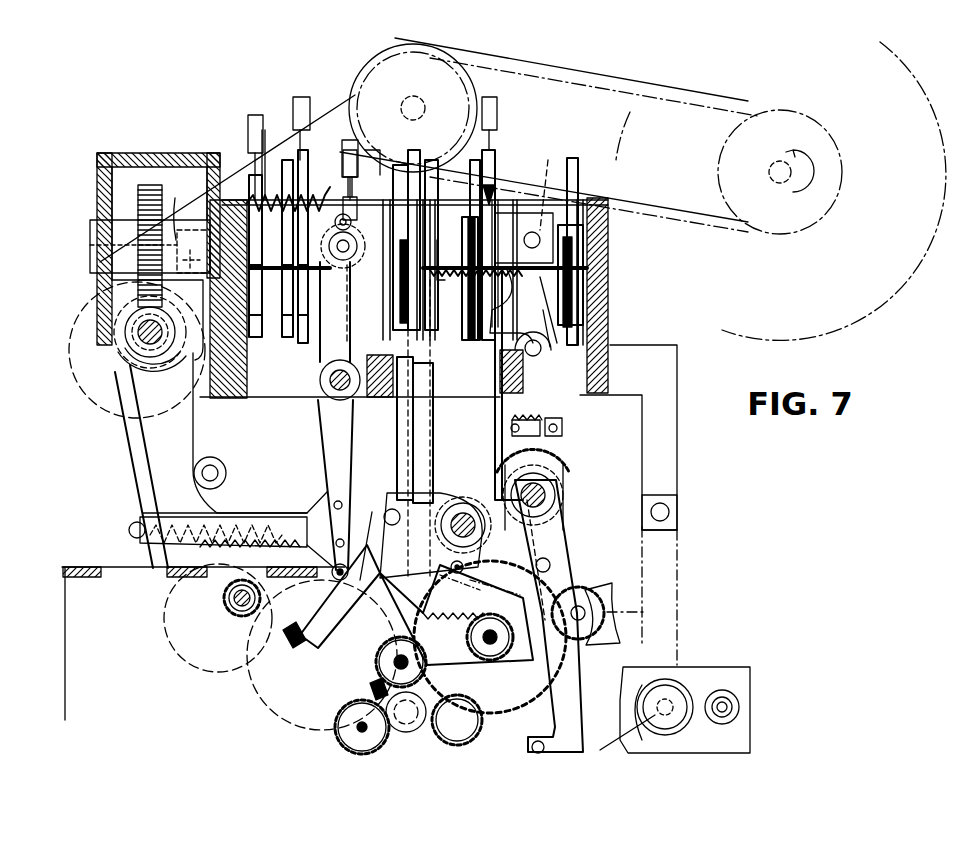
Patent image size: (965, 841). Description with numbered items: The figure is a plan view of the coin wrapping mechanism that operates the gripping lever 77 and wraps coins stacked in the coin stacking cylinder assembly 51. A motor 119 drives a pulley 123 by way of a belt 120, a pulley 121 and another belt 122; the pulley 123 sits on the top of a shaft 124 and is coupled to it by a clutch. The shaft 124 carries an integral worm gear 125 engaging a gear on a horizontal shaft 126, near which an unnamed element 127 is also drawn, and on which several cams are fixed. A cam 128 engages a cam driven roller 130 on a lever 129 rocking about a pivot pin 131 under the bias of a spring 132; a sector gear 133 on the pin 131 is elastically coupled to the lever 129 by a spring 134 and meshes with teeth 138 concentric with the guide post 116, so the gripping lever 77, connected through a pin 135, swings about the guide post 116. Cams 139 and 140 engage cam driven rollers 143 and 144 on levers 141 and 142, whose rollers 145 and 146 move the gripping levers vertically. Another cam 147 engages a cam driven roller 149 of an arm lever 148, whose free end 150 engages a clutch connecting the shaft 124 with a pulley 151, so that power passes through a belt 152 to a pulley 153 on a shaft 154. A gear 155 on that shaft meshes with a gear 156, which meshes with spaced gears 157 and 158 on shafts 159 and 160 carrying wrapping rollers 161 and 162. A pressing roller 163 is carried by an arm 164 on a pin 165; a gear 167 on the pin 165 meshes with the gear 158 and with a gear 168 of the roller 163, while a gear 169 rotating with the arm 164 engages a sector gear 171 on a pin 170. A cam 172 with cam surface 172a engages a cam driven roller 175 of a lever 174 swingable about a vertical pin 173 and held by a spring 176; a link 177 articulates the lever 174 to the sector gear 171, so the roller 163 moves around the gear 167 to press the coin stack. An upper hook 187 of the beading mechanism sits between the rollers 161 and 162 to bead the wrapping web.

The coin stacking cylinder assembly 51 is at (702, 659).
The gripping lever 77 is at (573, 677).
The guide post 116 is at (560, 490).
The motor 119 is at (689, 330).
The belt 120 is at (640, 82).
The pulley 121 is at (480, 92).
The belt 122 is at (240, 180).
The pulley 123 is at (72, 376).
The shaft 124 is at (162, 370).
The worm gear 125 is at (128, 332).
The horizontal shaft 126 is at (182, 206).
The adjusting screw 127 is at (148, 183).
The cam 128 is at (500, 213).
The lever 129 is at (583, 270).
The cam driven roller 130 is at (560, 179).
The pivot pin 131 is at (534, 357).
The spring 132 is at (523, 308).
The sector gear 133 is at (562, 432).
The spring 134 is at (536, 416).
The pin 135 is at (550, 562).
The teeth 138 is at (570, 460).
The cam 139 is at (500, 190).
The cam 140 is at (578, 178).
The lever 141 is at (440, 385).
The lever 142 is at (580, 370).
The cam driven roller 143 is at (440, 240).
The cam driven roller 144 is at (600, 300).
The roller 145 is at (480, 553).
The roller 146 is at (583, 512).
The cam 147 is at (268, 127).
The arm lever 148 is at (222, 108).
The cam driven roller 149 is at (298, 100).
The free end 150 is at (197, 405).
The pulley 151 is at (130, 377).
The belt 152 is at (135, 485).
The pulley 153 is at (178, 645).
The shaft 154 is at (240, 611).
The gear 155 is at (225, 585).
The gear 156 is at (248, 690).
The gear 157 is at (396, 726).
The gear 158 is at (425, 645).
The shaft 159 is at (355, 720).
The shaft 160 is at (396, 640).
The wrapping roller 161 is at (336, 735).
The wrapping roller 162 is at (402, 653).
The pressing roller 163 is at (582, 587).
The arm 164 is at (614, 583).
The pin 165 is at (505, 645).
The gear 167 is at (475, 712).
The gear 168 is at (643, 612).
The gear 169 is at (490, 637).
The pin 170 is at (458, 512).
The sector gear 171 is at (495, 571).
The cam 172 is at (350, 165).
The cam surface 172a is at (373, 143).
The vertical pin 173 is at (320, 380).
The lever 174 is at (330, 434).
The cam driven roller 175 is at (357, 205).
The spring 176 is at (337, 288).
The link 177 is at (376, 534).
The upper hook 187 is at (376, 680).